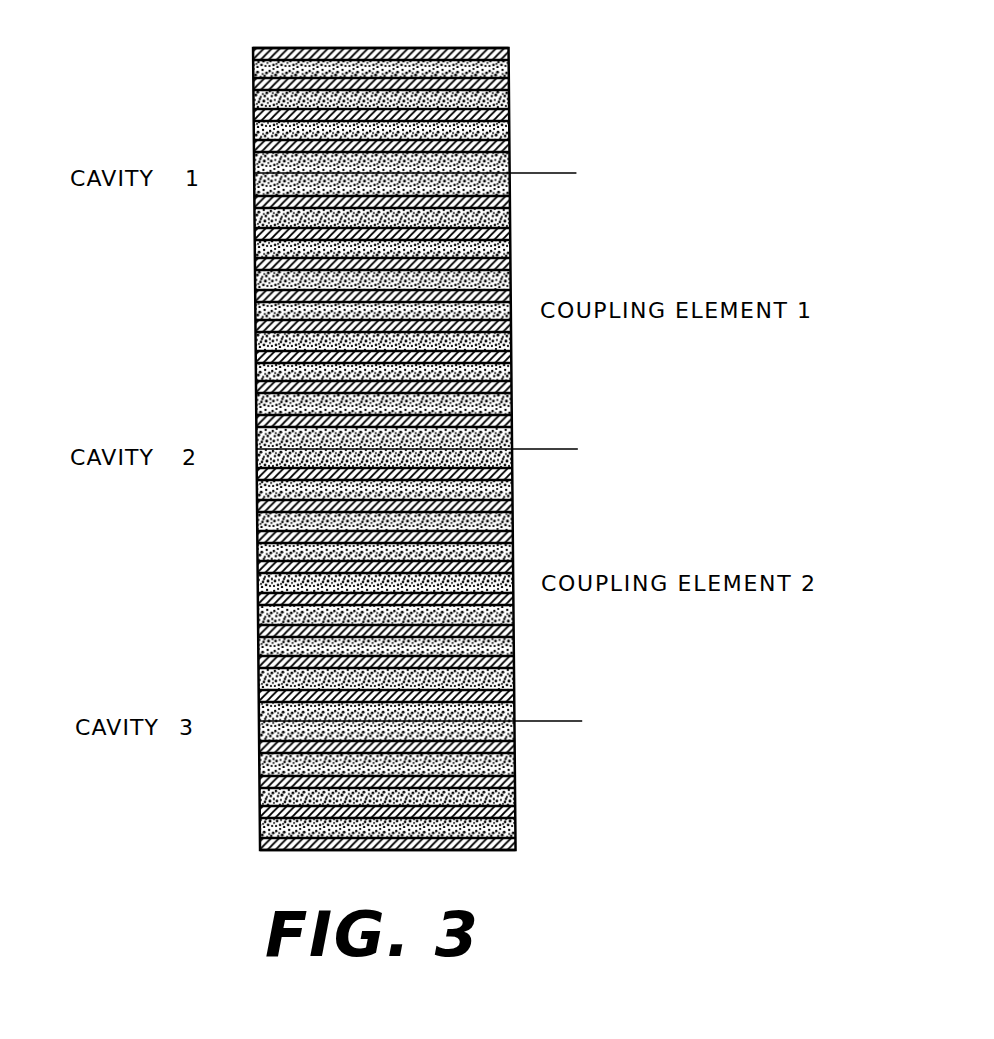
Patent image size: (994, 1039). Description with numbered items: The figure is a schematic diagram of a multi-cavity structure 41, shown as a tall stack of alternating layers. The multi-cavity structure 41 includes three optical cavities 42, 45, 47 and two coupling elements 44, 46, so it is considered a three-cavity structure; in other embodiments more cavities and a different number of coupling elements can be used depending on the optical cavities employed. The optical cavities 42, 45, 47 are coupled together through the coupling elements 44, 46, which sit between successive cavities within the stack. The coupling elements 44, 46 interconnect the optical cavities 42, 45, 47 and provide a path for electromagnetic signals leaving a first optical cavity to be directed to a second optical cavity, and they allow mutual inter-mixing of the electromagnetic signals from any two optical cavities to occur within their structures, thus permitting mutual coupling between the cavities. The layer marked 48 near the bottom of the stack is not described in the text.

The multi-cavity structure 41 is at (378, 449).
The optical cavity 42 is at (243, 158).
The coupling element 44 is at (241, 280).
The optical cavity 45 is at (243, 432).
The coupling element 46 is at (243, 535).
The optical cavity 47 is at (248, 705).
The bottom layer 48 is at (245, 810).